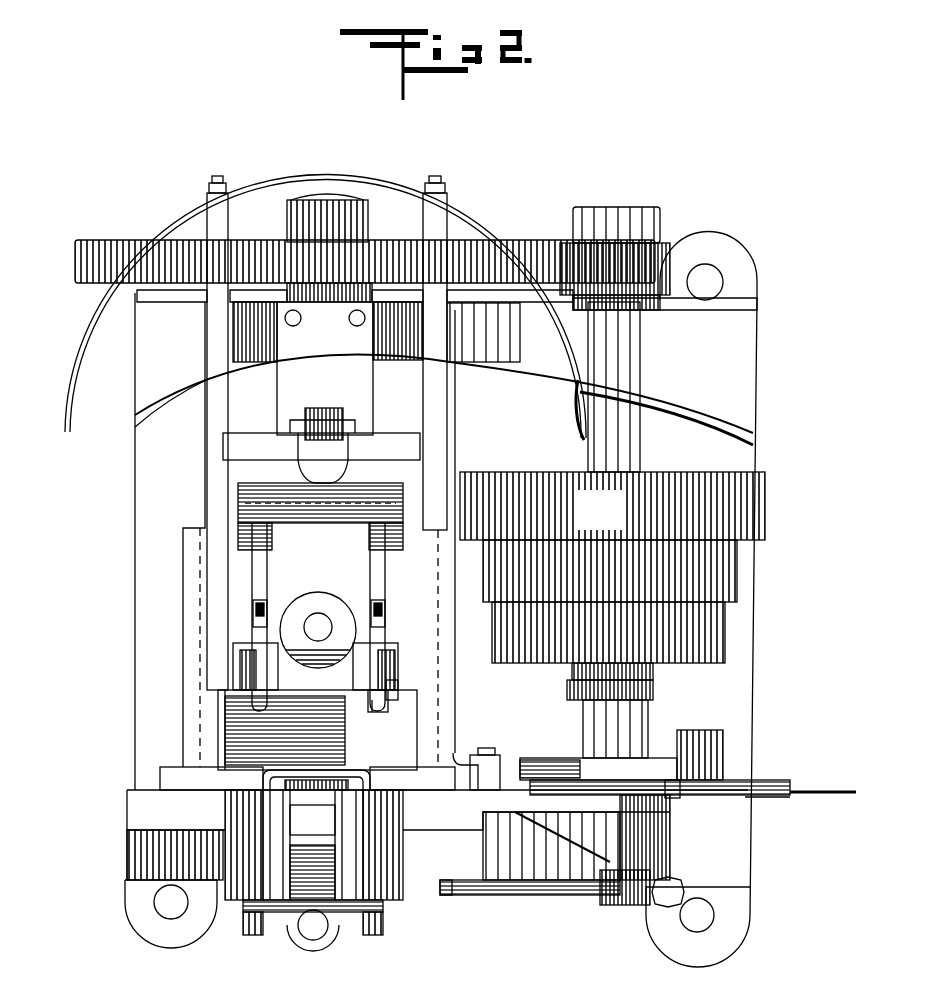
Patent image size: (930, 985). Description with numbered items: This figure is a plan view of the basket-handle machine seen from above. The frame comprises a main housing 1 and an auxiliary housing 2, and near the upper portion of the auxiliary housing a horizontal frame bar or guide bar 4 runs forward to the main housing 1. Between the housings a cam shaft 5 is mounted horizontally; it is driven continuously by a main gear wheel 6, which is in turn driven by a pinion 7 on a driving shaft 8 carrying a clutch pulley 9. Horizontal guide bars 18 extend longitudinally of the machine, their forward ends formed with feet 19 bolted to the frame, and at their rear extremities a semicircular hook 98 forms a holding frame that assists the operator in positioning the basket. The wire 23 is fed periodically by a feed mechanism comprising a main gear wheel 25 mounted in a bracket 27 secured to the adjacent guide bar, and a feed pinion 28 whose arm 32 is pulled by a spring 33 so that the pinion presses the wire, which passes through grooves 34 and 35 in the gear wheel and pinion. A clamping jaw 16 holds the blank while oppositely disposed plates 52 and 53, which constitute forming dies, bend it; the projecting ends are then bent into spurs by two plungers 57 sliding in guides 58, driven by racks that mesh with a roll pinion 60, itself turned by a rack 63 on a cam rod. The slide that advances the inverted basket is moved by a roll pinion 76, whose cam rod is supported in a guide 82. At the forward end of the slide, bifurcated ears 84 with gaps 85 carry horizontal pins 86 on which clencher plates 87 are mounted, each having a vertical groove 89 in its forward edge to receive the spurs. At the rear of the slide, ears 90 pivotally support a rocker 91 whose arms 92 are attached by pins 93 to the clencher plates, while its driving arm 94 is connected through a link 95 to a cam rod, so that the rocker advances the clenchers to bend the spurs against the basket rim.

The main housing 1 is at (436, 869).
The auxiliary housing 2 is at (446, 630).
The horizontal frame bar or guide bar 4 is at (325, 368).
The cam shaft 5 is at (325, 198).
The main gear wheel 6 is at (472, 262).
The pinion 7 is at (672, 250).
The driving shaft 8 is at (625, 440).
The clutch pulley 9 is at (612, 567).
The clamping jaw 16 is at (340, 777).
The guide bars 18 is at (207, 450).
The feet 19 is at (473, 756).
The wire 23 is at (812, 790).
The main gear wheel 25 is at (745, 785).
The bracket 27 is at (672, 748).
The feed pinion 28 is at (648, 760).
The arm 32 is at (565, 895).
The spring 33 is at (440, 885).
The groove 34 is at (770, 797).
The groove 35 is at (680, 798).
The plate (forming die) 52 is at (211, 777).
The plate (forming die) 53 is at (412, 777).
The plungers 57 is at (383, 930).
The guides 58 is at (238, 809).
The roll pinion 60 is at (258, 928).
The rack 63 is at (315, 935).
The roll pinion 76 is at (328, 612).
The guide 82 is at (265, 626).
The bifurcated ears 84 is at (392, 668).
The gaps 85 is at (386, 625).
The pins 86 is at (388, 692).
The clenchers 87 is at (372, 700).
The groove 89 is at (376, 708).
The ears 90 is at (405, 488).
The rocker 91 is at (320, 523).
The arms 92 is at (258, 565).
The pins 93 is at (270, 620).
The driving arm 94 is at (335, 447).
The link 95 is at (325, 410).
The semicircular hook 98 is at (400, 190).